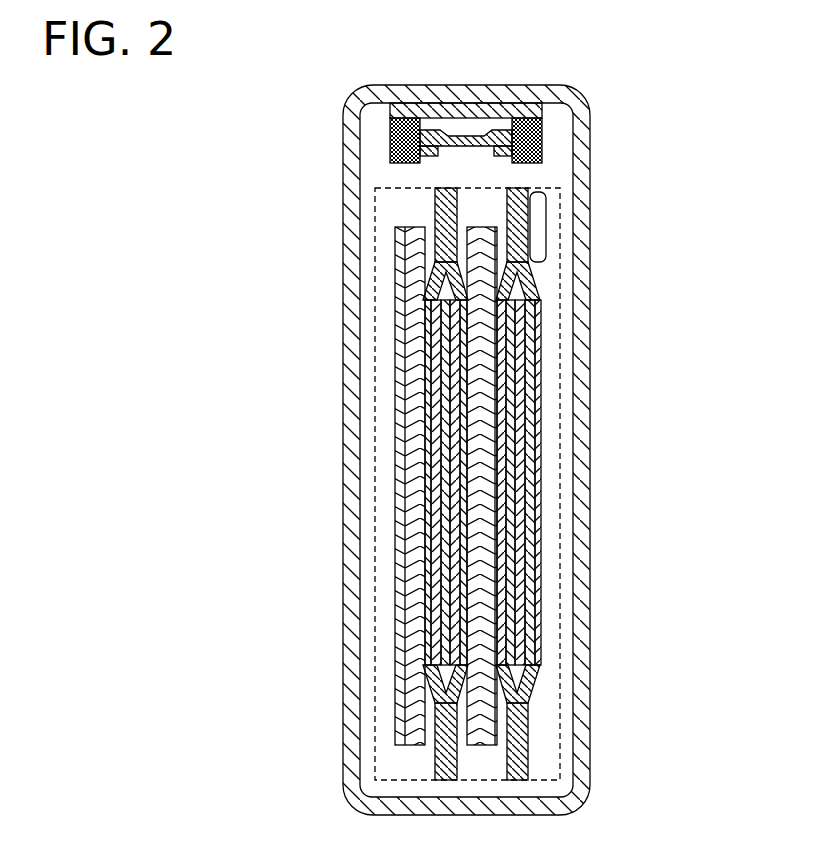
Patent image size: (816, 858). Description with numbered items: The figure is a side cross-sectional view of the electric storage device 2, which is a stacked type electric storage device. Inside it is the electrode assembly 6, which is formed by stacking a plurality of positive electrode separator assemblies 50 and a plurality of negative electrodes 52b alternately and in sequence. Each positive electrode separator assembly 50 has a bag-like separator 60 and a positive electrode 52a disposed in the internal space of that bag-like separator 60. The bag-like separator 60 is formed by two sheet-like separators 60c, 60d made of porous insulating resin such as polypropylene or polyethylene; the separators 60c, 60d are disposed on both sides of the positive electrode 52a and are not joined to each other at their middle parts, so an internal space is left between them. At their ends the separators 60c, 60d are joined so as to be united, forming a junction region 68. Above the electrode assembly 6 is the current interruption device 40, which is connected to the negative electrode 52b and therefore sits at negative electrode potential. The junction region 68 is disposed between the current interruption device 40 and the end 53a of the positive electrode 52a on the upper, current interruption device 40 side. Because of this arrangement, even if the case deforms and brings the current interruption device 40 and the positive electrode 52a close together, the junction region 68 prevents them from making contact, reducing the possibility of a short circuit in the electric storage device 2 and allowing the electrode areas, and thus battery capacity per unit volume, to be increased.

The electric storage device 2 is at (455, 38).
The electrode assembly 6 is at (363, 262).
The current interruption device 40 is at (379, 148).
The positive electrode separator assembly 50 is at (567, 474).
The positive electrode 52a is at (527, 350).
The negative electrode 52b is at (476, 215).
The end of the positive electrode 53a is at (534, 292).
The bag-like separator 60 is at (582, 482).
The separator 60c is at (537, 457).
The separator 60d is at (534, 372).
The junction region 68 is at (546, 228).